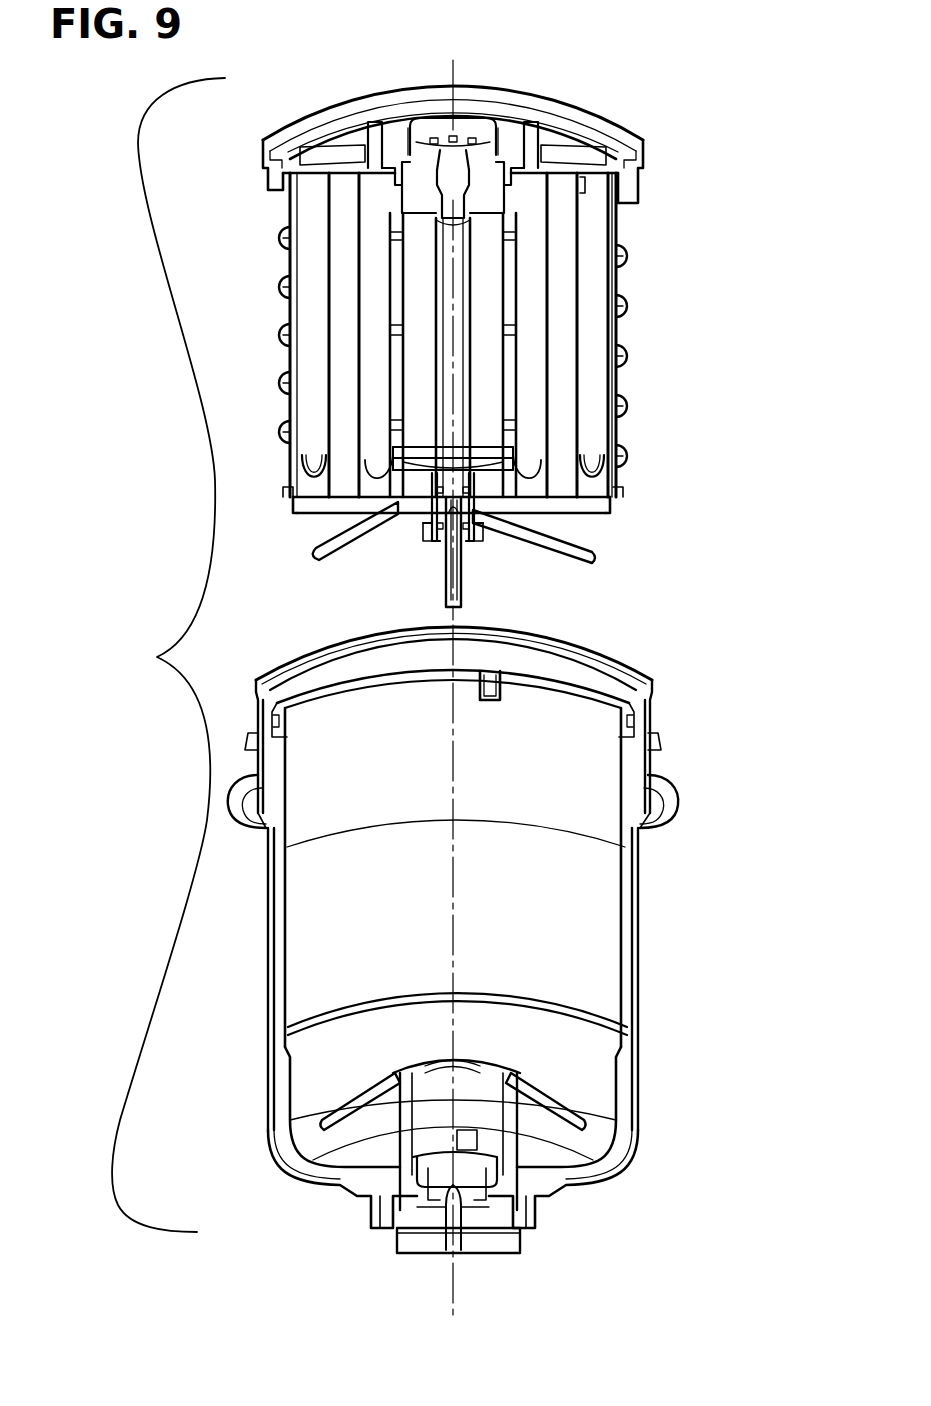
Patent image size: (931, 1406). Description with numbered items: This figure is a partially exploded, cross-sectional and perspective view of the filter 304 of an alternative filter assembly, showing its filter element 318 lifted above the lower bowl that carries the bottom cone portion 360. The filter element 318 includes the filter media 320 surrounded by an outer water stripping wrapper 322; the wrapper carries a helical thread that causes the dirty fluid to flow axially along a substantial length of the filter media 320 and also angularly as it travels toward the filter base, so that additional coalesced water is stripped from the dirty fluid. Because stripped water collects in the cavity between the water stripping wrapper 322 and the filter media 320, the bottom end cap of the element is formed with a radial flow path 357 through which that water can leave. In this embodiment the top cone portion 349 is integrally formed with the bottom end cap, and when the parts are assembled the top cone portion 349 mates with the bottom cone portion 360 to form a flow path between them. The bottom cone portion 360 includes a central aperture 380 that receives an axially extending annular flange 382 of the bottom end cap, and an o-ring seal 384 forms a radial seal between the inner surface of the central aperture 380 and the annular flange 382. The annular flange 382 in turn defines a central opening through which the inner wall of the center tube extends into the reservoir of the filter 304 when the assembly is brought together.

The filter 304 is at (163, 655).
The filter element 318 is at (539, 356).
The filter media 320 is at (598, 389).
The water stripping wrapper 322 is at (612, 337).
The top cone portion 349 is at (578, 541).
The radial flow path 357 is at (510, 513).
The central aperture 380 is at (478, 1065).
The annular flange 382 is at (438, 555).
The o-ring seal 384 is at (398, 537).
The bottom cone portion 360 is at (570, 1098).